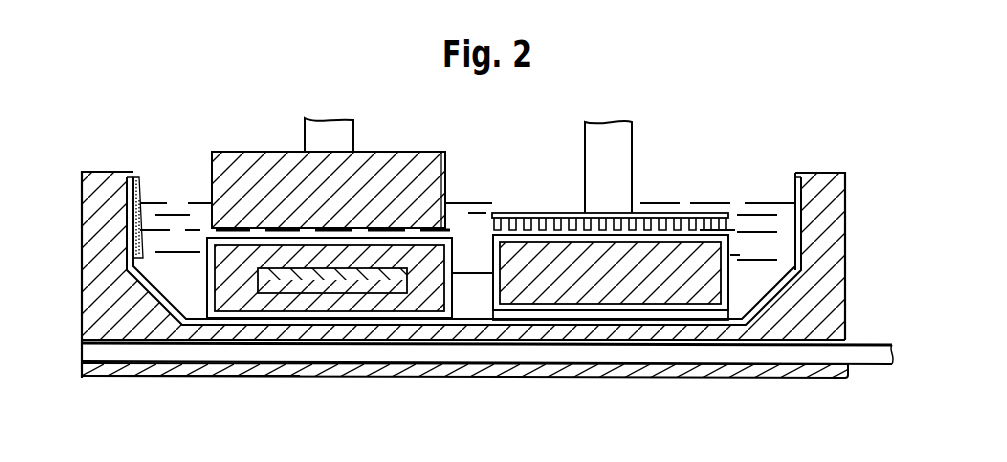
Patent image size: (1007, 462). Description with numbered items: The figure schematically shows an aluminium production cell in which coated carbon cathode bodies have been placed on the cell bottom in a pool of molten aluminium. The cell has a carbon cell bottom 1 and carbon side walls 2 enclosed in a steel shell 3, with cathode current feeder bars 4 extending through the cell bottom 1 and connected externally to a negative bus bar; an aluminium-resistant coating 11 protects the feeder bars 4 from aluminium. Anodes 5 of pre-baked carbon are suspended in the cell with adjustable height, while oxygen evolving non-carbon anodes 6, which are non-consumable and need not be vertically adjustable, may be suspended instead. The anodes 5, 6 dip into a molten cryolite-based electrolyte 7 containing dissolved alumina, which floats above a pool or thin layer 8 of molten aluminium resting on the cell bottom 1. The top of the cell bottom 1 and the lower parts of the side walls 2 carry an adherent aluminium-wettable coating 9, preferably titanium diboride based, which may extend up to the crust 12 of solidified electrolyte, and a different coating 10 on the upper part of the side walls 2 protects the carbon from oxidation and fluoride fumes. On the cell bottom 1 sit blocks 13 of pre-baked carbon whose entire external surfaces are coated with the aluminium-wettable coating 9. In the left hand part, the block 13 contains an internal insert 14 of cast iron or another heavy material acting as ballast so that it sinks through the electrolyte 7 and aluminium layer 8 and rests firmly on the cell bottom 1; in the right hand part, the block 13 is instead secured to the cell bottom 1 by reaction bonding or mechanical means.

The cell bottom 1 is at (690, 368).
The side walls 2 is at (834, 232).
The steel shell 3 is at (847, 304).
The cathode current feeder bars 4 is at (848, 353).
The anodes 5 is at (422, 189).
The oxygen evolving non-carbon anodes 6 is at (661, 213).
The molten electrolyte 7 is at (751, 217).
The molten aluminium layer 8 is at (178, 297).
The aluminium-wettable coating 9 is at (535, 313).
The oxidation-resistant coating 10 is at (212, 177).
The aluminium-resistant coating 11 is at (189, 377).
The crust of solidified electrolyte 12 is at (137, 218).
The blocks of pre-baked carbon 13 is at (360, 303).
The internal inserts 14 is at (308, 290).